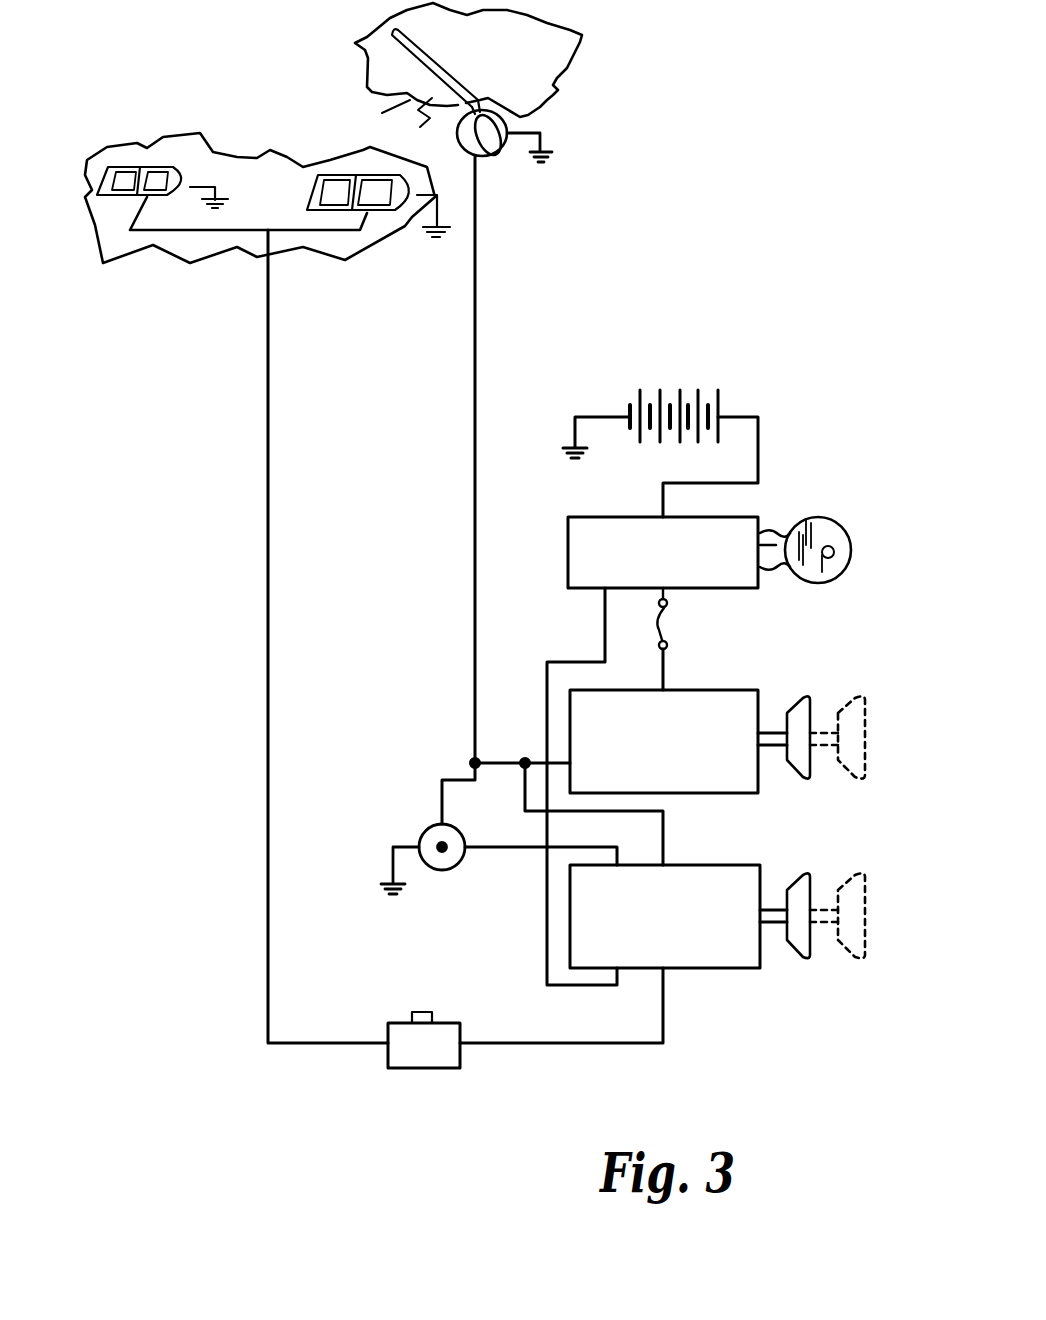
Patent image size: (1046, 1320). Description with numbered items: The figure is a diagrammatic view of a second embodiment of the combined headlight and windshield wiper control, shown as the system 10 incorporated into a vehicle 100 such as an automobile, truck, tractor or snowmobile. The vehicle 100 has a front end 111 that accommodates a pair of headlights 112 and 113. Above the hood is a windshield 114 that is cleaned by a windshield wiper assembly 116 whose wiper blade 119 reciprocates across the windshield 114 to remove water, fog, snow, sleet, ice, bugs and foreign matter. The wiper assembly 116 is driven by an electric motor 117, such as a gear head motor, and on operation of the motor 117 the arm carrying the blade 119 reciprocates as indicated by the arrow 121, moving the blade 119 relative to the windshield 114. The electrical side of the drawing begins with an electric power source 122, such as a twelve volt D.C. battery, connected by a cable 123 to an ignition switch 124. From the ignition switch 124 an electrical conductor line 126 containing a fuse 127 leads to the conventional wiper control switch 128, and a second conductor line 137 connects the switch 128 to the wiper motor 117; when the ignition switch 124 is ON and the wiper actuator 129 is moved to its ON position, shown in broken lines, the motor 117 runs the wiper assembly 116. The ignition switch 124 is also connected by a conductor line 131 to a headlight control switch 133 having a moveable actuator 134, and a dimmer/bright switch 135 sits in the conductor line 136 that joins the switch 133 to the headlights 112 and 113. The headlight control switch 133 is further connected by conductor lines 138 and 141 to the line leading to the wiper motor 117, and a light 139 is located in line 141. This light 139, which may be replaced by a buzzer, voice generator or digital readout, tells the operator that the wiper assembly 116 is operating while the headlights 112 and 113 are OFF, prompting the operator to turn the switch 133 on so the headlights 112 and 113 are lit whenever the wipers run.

The vehicle wiper control system 10 is at (630, 189).
The vehicle 100 is at (327, 281).
The front end 111 is at (230, 152).
The headlight 112 is at (120, 172).
The headlight 113 is at (333, 178).
The windshield 114 is at (413, 130).
The windshield wiper assembly 116 is at (528, 101).
The electric motor 117 is at (488, 160).
The wiper blade 119 is at (512, 50).
The arrow 121 is at (395, 86).
The electric power source 122 is at (678, 395).
The cable 123 is at (760, 447).
The ignition switch 124 is at (568, 527).
The electrical conductor line 126 is at (668, 668).
The fuse 127 is at (673, 627).
The wiper control switch 128 is at (745, 790).
The wiper actuator 129 is at (800, 713).
The conductor line 131 is at (527, 752).
The headlight control switch 133 is at (700, 950).
The moveable actuator 134 is at (795, 945).
The dimmer/bright switch 135 is at (418, 1056).
The conductor line 136 is at (302, 1045).
The second conductor line 137 is at (480, 290).
The conductor line 138 is at (663, 840).
The light 139 is at (428, 828).
The conductor line 141 is at (482, 850).